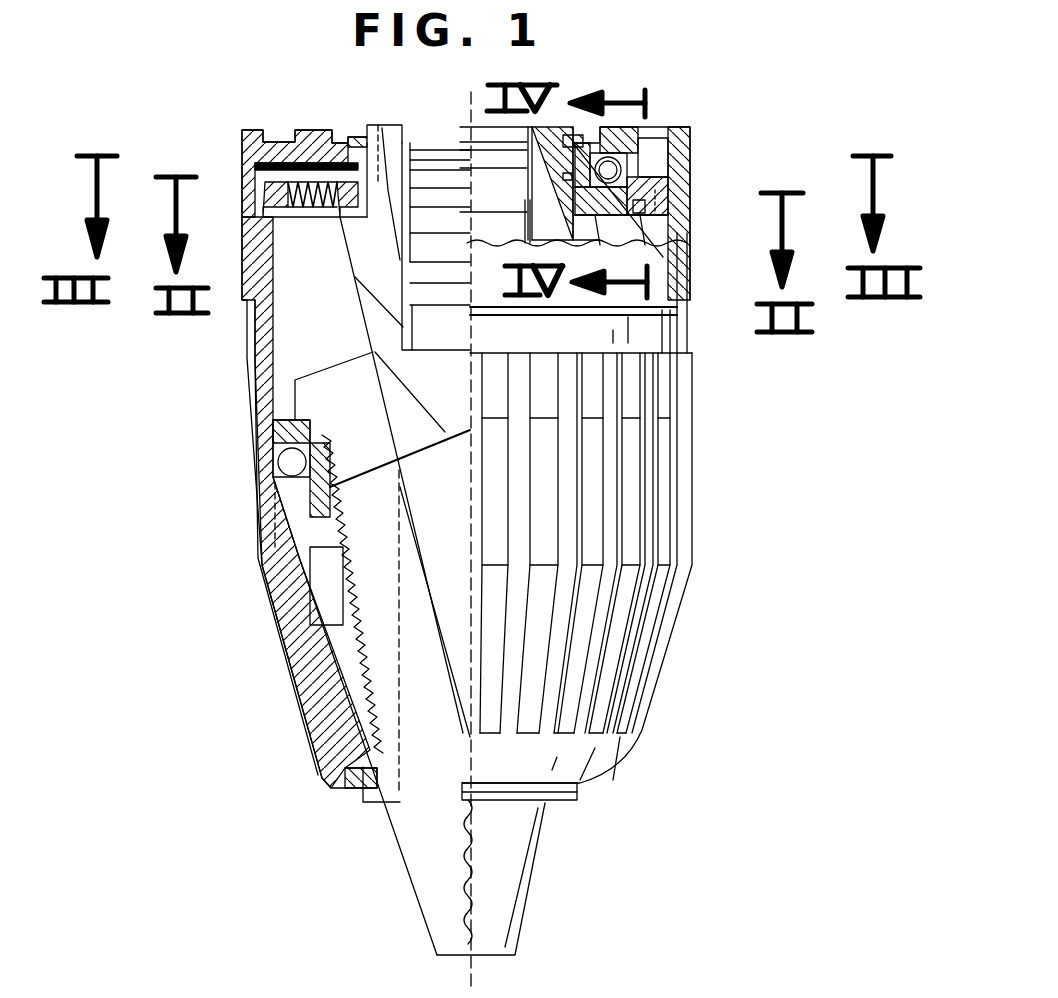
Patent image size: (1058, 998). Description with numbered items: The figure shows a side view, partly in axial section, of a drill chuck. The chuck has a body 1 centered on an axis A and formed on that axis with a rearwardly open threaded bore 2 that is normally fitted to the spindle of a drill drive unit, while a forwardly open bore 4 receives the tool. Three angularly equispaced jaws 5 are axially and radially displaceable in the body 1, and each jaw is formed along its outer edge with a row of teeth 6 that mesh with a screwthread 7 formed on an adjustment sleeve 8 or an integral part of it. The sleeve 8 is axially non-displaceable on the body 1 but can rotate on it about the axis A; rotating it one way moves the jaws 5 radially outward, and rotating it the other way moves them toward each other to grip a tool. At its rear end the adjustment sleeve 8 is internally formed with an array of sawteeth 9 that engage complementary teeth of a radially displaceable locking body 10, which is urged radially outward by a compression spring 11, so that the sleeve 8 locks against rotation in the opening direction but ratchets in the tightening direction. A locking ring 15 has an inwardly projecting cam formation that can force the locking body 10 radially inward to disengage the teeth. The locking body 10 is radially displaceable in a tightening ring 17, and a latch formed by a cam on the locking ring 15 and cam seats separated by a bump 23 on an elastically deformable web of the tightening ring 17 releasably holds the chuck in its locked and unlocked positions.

The body 1 is at (380, 317).
The threaded bore 2 is at (435, 183).
The forwardly open bore 4 is at (440, 525).
The jaws 5 is at (430, 887).
The teeth 6 is at (382, 667).
The screwthread 7 is at (330, 487).
The adjustment sleeve 8 is at (250, 467).
The sawteeth 9 is at (672, 207).
The locking body 10 is at (305, 168).
The compression spring 11 is at (308, 170).
The locking ring 15 is at (687, 135).
The tightening ring 17 is at (690, 270).
The bump 23 is at (690, 225).
The axis A is at (478, 972).